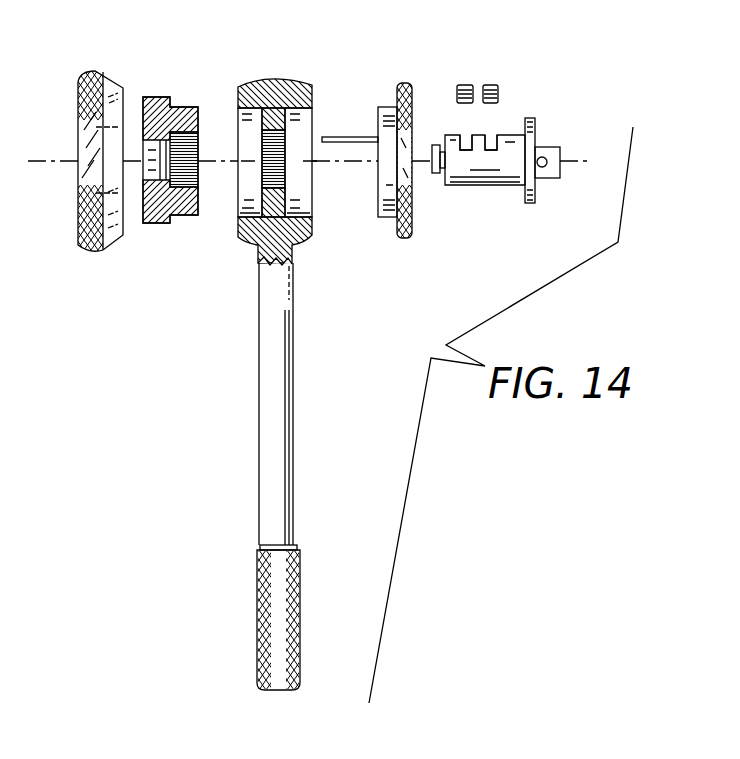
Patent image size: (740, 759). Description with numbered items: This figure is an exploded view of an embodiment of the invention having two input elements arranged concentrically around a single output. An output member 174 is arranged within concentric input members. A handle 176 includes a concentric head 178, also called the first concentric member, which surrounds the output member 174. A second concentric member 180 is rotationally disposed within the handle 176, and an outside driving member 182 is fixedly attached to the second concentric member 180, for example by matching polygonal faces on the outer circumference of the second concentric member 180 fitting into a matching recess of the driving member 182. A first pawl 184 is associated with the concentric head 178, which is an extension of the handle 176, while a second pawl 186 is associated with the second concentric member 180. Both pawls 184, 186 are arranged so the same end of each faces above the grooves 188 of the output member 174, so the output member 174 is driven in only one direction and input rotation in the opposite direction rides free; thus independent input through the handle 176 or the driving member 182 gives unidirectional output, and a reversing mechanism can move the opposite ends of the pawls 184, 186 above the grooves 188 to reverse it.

The output member 174 is at (520, 141).
The handle 176 is at (278, 353).
The concentric head 178 is at (282, 78).
The second concentric member 180 is at (176, 78).
The outside driving member 182 is at (112, 67).
The first pawl 184 is at (486, 83).
The second pawl 186 is at (465, 85).
The grooves 188 is at (492, 143).